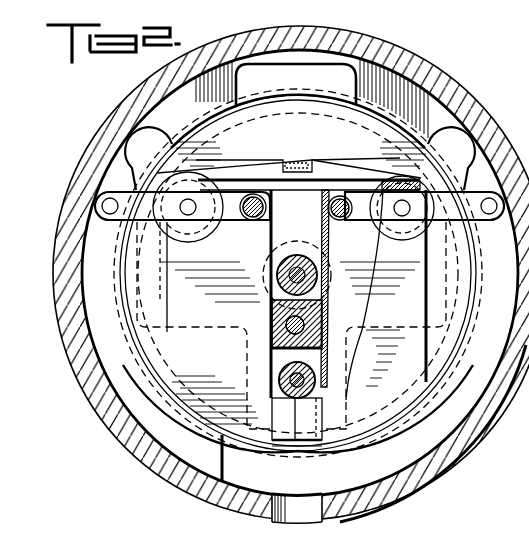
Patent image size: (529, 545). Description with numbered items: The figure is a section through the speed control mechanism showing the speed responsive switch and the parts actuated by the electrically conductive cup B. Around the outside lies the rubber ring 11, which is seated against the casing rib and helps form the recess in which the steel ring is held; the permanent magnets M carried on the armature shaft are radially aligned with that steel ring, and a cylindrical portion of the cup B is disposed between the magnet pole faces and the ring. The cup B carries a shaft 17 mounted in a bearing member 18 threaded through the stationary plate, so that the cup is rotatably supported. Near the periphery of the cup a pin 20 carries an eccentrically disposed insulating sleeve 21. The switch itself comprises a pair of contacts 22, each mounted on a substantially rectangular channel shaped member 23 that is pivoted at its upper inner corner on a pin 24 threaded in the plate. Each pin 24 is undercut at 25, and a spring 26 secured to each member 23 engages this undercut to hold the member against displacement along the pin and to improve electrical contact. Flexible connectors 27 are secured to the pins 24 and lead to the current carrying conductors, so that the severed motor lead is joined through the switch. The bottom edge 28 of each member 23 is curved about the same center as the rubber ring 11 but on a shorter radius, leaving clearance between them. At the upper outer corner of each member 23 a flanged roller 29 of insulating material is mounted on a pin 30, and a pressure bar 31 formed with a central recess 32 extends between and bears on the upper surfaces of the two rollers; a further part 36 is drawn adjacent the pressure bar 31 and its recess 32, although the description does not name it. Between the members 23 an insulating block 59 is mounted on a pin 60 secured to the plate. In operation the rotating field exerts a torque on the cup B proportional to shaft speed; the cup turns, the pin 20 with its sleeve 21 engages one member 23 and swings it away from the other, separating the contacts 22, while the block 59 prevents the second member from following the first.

The rubber ring 11 is at (421, 74).
The cup B is at (214, 128).
The permanent magnets M is at (315, 102).
The flexible connectors 27 is at (122, 222).
The pin 30 is at (194, 236).
The flanged roller 29 is at (198, 184).
The pressure bar 31 is at (368, 176).
The bracket 36 is at (294, 156).
The central recess 32 is at (310, 166).
The pin 24 is at (253, 220).
The undercut portion 25 is at (340, 220).
The spring 26 is at (322, 230).
The shaft 17 is at (293, 260).
The bearing member 18 is at (272, 280).
The pin 60 is at (272, 320).
The insulating block 59 is at (320, 318).
The insulating sleeve 21 is at (276, 364).
The pin 20 is at (310, 384).
The contacts 22 is at (297, 442).
The channel shaped member 23 is at (142, 344).
The bottom edge 28 is at (208, 386).